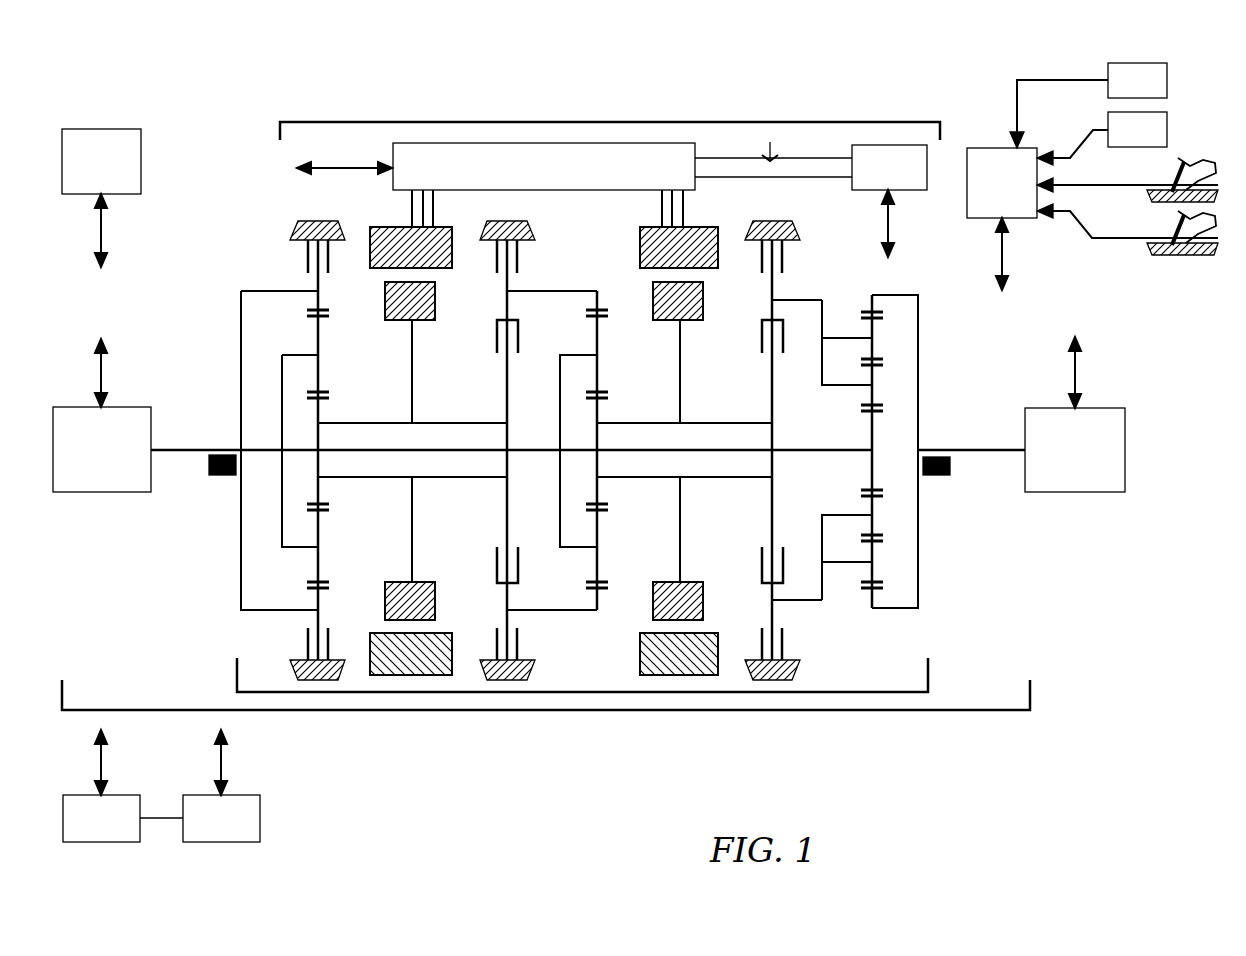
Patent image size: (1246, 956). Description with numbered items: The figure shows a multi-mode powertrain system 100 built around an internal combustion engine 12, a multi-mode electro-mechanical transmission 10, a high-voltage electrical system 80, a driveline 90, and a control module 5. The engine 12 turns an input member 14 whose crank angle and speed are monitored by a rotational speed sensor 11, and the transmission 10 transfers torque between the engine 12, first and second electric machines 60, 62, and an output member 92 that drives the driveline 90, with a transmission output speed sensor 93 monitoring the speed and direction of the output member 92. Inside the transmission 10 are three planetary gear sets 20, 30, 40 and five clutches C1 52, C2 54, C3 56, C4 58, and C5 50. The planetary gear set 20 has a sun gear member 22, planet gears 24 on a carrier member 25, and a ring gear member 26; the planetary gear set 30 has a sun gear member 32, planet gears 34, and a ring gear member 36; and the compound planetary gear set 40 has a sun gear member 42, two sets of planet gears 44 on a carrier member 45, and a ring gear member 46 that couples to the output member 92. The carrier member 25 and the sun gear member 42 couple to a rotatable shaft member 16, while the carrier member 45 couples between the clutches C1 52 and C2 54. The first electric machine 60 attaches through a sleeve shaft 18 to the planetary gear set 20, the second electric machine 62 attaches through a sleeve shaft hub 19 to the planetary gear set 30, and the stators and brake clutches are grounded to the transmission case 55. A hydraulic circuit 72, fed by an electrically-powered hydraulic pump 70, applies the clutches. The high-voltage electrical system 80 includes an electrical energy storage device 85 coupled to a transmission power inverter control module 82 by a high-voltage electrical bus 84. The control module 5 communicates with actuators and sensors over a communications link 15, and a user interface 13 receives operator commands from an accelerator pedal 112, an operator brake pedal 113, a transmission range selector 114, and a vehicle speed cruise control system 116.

The control module 5 is at (101, 161).
The multi-mode electro-mechanical transmission 10 is at (712, 692).
The rotational speed sensor 11 is at (222, 476).
The internal combustion engine 12 is at (102, 449).
The user interface 13 is at (1002, 183).
The input member 14 is at (190, 452).
The communications link 15 is at (576, 468).
The rotatable shaft member 16 is at (520, 448).
The sleeve shaft 18 is at (460, 422).
The sleeve shaft hub 19 is at (730, 422).
The planetary gear set 20 is at (334, 494).
The sun gear member 22 is at (325, 400).
The planet gears 24 is at (318, 358).
The carrier member 25 is at (283, 425).
The ring gear member 26 is at (322, 312).
The planetary gear set 30 is at (610, 494).
The sun gear member 32 is at (605, 400).
The planet gears 34 is at (600, 360).
The ring gear member 36 is at (602, 310).
The planetary gear set 40 is at (855, 438).
The sun gear member 42 is at (876, 490).
The planet gears 44 is at (878, 520).
The carrier member 45 is at (825, 312).
The ring gear member 46 is at (868, 612).
The clutch C5 50 is at (310, 262).
The clutch C1 52 is at (785, 265).
The clutch C2 54 is at (760, 340).
The transmission case 55 is at (305, 226).
The clutch C3 56 is at (515, 250).
The clutch C4 58 is at (494, 340).
The first electric machine 60 is at (440, 270).
The second electric machine 62 is at (700, 270).
The electrically-powered hydraulic pump 70 is at (123, 818).
The hydraulic circuit 72 is at (221, 818).
The high-voltage electrical system 80 is at (618, 122).
The transmission power inverter control module 82 is at (544, 166).
The high-voltage electrical bus 84 is at (805, 158).
The electrical energy storage device 85 is at (811, 167).
The driveline 90 is at (1075, 450).
The output member 92 is at (985, 448).
The transmission output speed sensor 93 is at (950, 472).
The powertrain system 100 is at (618, 710).
The accelerator pedal 112 is at (1165, 238).
The operator brake pedal 113 is at (1170, 185).
The transmission range selector 114 is at (1102, 138).
The vehicle speed cruise control system 116 is at (1088, 105).